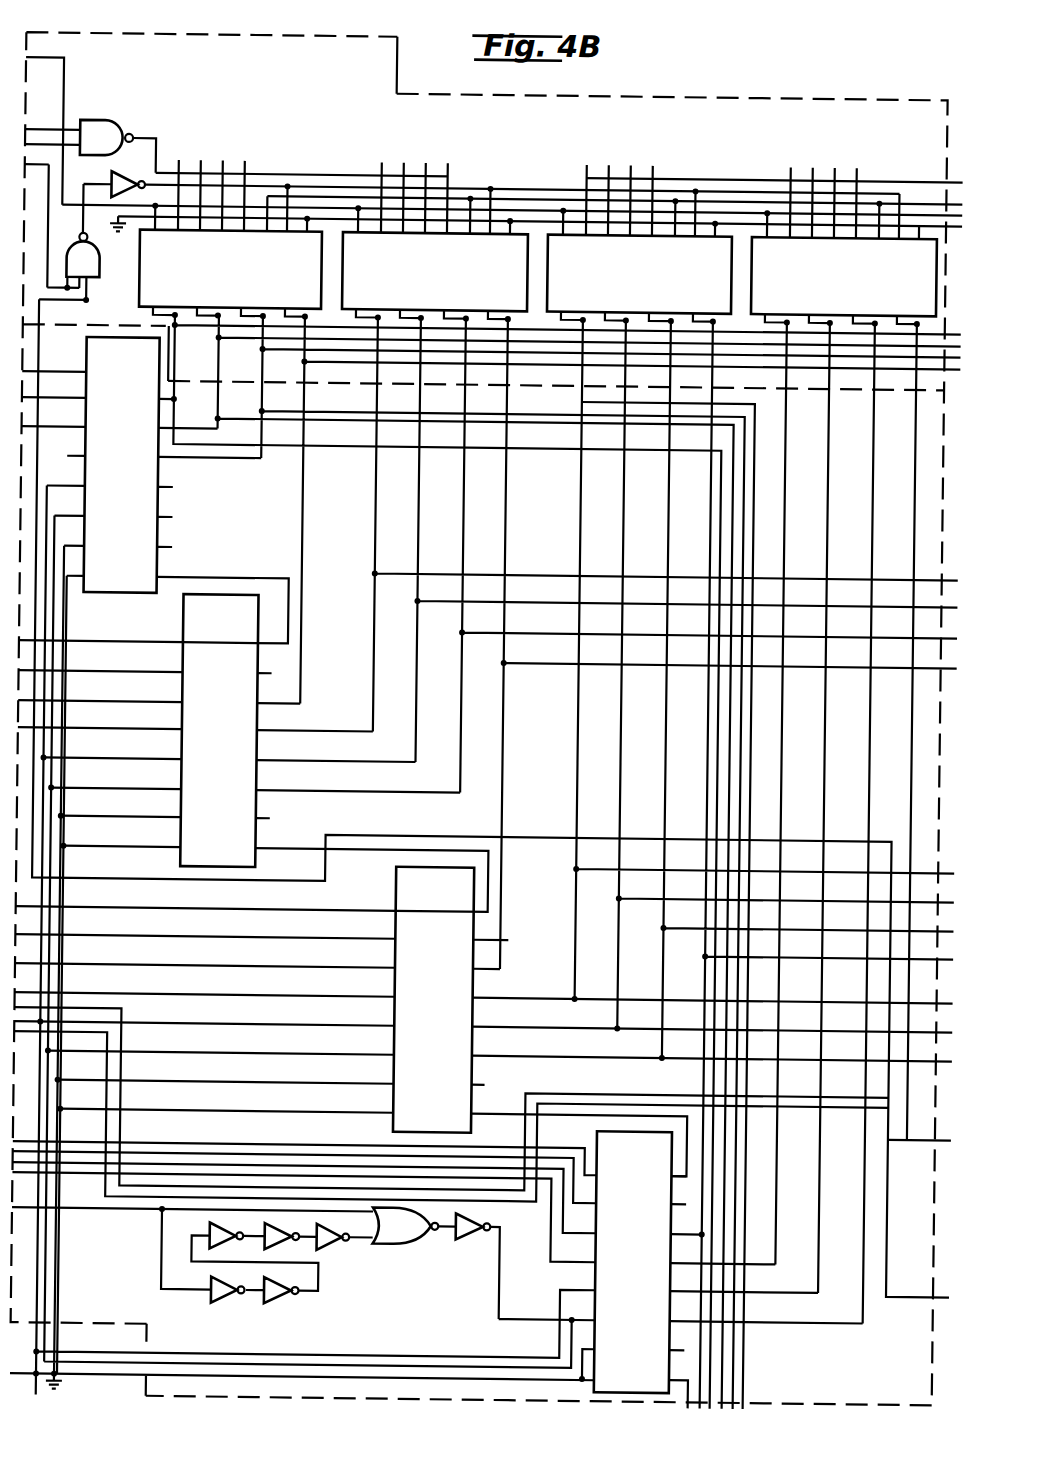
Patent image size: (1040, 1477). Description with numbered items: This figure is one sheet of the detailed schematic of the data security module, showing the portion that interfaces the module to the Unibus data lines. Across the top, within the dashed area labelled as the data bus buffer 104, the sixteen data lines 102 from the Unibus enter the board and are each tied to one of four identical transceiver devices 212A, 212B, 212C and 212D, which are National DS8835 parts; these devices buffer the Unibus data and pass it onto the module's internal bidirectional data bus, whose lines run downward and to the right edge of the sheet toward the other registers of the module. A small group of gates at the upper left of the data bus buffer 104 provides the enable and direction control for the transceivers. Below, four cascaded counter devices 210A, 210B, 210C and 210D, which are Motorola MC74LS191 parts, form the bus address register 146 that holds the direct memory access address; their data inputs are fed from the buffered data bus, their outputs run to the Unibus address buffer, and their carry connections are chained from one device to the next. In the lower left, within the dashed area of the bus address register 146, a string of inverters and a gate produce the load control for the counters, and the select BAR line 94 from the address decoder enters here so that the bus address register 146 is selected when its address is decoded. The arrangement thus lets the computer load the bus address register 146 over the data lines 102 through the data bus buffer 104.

The data bus buffer 104 is at (140, 98).
The data lines 102 is at (226, 166).
The bus address register 146 is at (93, 1279).
The select BAR line 94 is at (512, 1274).
The DS8835 device 212A is at (210, 281).
The DS8835 device 212B is at (414, 281).
The DS8835 device 212C is at (619, 281).
The DS8835 device 212D is at (824, 281).
The MC74LS191 device 210A is at (626, 1154).
The MC74LS191 device 210B is at (424, 889).
The MC74LS191 device 210C is at (206, 618).
The MC74LS191 device 210D is at (105, 362).